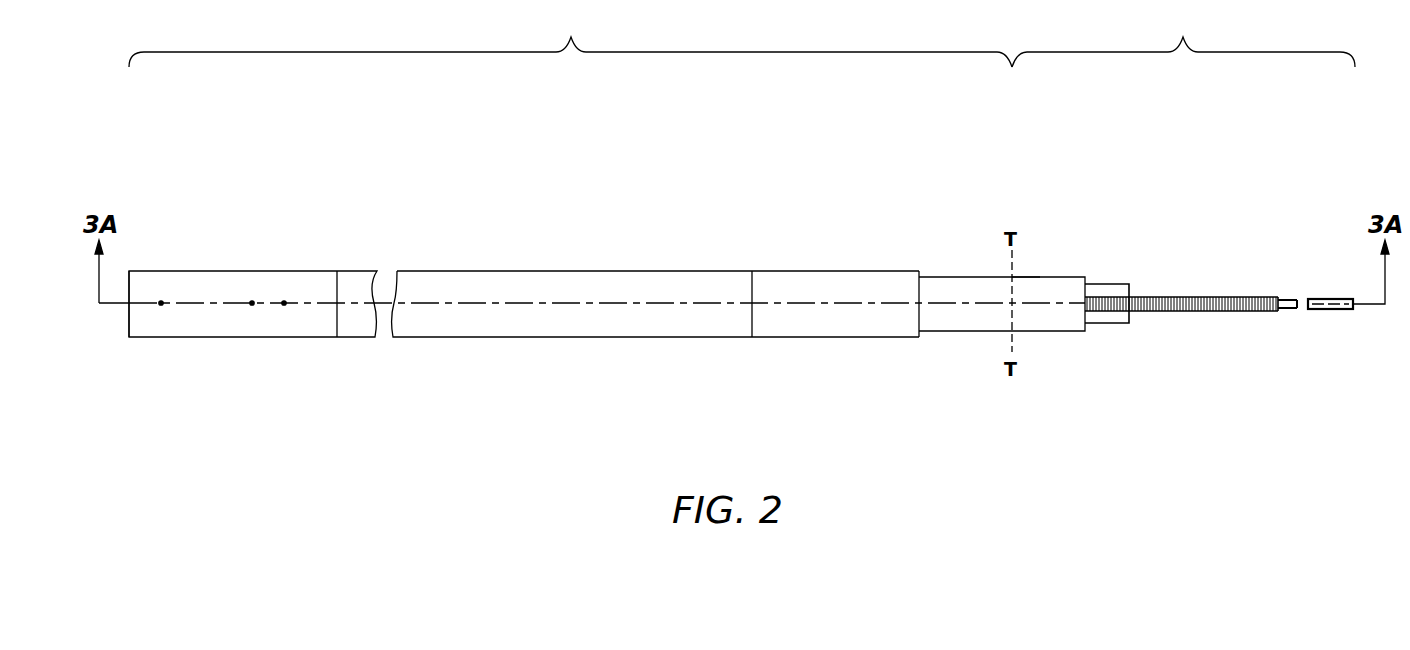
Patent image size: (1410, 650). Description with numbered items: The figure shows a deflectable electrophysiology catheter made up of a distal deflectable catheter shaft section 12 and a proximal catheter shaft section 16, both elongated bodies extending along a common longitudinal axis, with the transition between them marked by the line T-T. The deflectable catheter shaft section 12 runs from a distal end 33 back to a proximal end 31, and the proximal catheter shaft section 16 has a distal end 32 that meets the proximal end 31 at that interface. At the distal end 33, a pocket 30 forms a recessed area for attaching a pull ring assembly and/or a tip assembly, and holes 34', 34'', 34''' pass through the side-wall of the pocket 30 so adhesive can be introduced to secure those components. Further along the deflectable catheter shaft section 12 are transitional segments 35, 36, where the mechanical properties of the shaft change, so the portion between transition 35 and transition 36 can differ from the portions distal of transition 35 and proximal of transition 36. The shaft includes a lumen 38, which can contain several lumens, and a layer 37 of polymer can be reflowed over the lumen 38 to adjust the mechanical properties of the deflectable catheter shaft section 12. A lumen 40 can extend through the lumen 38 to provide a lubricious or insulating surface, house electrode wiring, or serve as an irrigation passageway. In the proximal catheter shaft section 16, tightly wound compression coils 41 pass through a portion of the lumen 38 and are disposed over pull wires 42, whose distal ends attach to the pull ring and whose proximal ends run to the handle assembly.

The deflectable catheter shaft section 12 is at (570, 39).
The proximal catheter shaft section 16 is at (1183, 39).
The pocket 30 is at (186, 285).
The proximal end 31 is at (1010, 297).
The distal end 32 is at (1013, 285).
The distal end 33 is at (128, 321).
The hole 34' is at (166, 349).
The hole 34'' is at (268, 257).
The hole 34''' is at (293, 349).
The transitional segment 35 is at (338, 321).
The transitional segment 36 is at (753, 320).
The layer 37 is at (918, 340).
The lumen 38 is at (926, 334).
The lumen 40 is at (1108, 284).
The compression coils 41 is at (1190, 297).
The pull wires 42 is at (1332, 299).